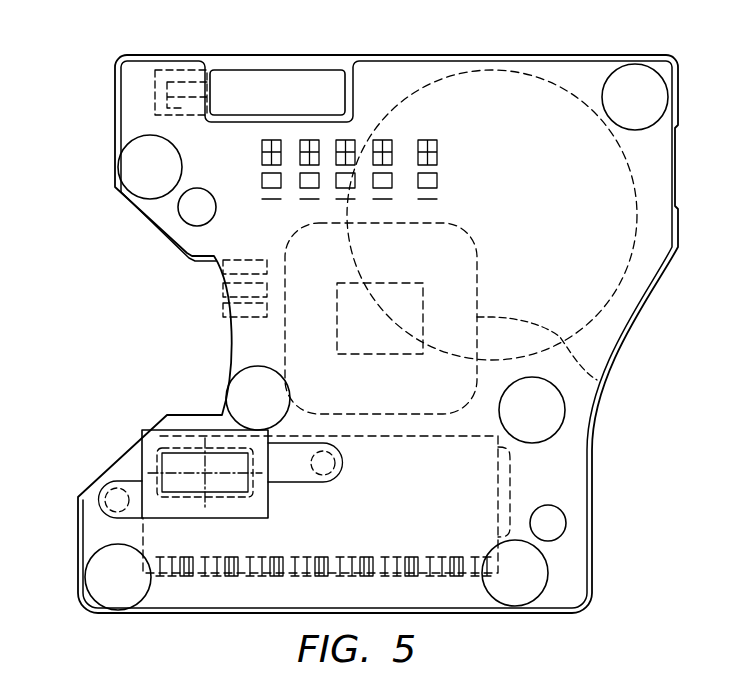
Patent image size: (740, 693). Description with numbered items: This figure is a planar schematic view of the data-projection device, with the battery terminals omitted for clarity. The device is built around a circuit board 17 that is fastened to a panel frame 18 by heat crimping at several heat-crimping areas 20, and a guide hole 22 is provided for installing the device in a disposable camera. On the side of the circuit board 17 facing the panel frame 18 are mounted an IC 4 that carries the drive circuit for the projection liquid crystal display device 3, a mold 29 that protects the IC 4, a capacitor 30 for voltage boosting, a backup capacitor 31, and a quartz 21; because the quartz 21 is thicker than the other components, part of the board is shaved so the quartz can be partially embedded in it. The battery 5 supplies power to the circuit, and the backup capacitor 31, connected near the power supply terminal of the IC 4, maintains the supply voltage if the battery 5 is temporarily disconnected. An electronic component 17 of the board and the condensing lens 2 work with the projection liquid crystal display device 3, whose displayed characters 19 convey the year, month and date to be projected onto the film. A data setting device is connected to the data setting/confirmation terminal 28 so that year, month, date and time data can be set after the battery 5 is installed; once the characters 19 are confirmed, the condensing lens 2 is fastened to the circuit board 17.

The condensing lens 2 is at (153, 508).
The projection liquid crystal display device 3 is at (392, 533).
The IC 4 is at (337, 311).
The battery 5 is at (508, 68).
The circuit board 17 is at (122, 67).
The panel frame 18 is at (307, 55).
The characters 19 is at (172, 458).
The heat-crimping area 20 is at (132, 163).
The quartz 21 is at (265, 78).
The guide hole 22 is at (195, 213).
The data setting/confirmation terminal 28 is at (228, 268).
The mold 29 is at (597, 380).
The capacitor 30 is at (271, 170).
The backup capacitor 31 is at (426, 170).